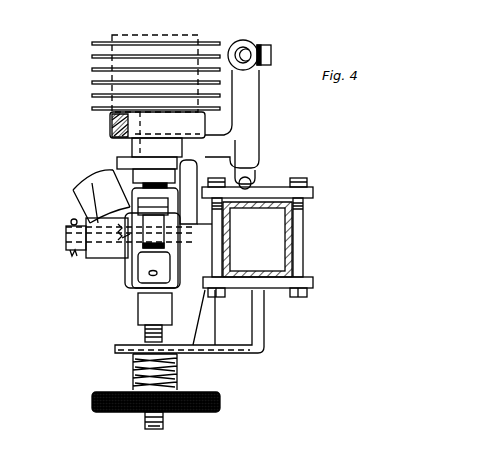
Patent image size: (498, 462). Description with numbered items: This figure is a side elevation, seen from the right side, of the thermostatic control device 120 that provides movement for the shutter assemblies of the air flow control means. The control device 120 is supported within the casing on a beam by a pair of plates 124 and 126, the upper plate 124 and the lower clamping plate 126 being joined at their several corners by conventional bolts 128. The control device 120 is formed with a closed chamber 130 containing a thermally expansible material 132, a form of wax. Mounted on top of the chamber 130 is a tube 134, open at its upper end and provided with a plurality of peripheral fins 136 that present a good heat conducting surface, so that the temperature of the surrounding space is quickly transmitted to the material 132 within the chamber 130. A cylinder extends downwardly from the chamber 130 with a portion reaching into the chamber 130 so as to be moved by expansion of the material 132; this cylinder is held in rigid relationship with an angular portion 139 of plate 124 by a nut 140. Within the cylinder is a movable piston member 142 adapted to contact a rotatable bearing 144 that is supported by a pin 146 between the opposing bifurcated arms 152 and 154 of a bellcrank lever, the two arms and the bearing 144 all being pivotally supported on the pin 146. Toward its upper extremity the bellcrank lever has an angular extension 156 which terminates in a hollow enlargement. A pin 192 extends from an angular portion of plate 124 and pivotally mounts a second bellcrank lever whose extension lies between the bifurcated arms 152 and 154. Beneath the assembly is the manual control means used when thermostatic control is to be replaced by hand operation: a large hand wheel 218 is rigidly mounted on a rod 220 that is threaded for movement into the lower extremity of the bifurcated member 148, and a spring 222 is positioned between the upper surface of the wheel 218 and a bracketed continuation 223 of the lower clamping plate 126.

The control device 120 is at (288, 150).
The plate 124 is at (117, 162).
The lower clamping plate 126 is at (313, 283).
The bolts 128 is at (300, 298).
The closed chamber 130 is at (118, 119).
The thermally expansible material 132 is at (112, 136).
The tube 134 is at (110, 40).
The peripheral fins 136 is at (104, 53).
The angular portion 139 is at (197, 178).
The nut 140 is at (110, 175).
The movable piston member 142 is at (95, 210).
The rotatable bearing 144 is at (140, 250).
The pin 146 is at (120, 234).
The bifurcated member 148 is at (125, 286).
The bifurcated arm 152 is at (190, 294).
The bifurcated arm 154 is at (122, 238).
The angular extension 156 is at (262, 114).
The pin 192 is at (66, 238).
The hand wheel 218 is at (115, 392).
The rod 220 is at (144, 333).
The spring 222 is at (178, 378).
The bracketed continuation 223 is at (264, 342).